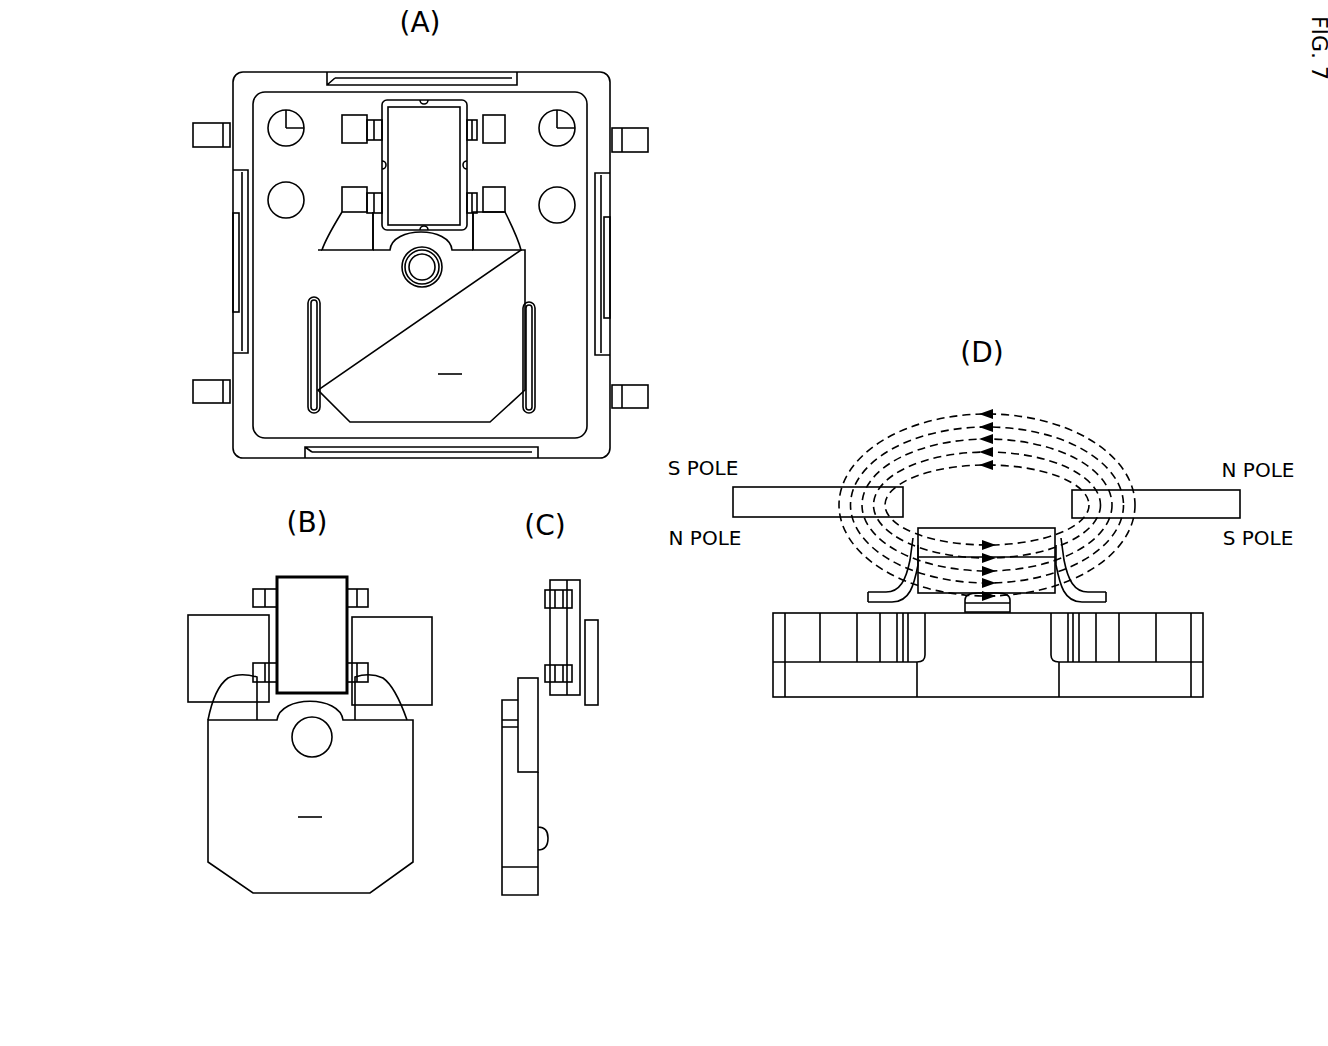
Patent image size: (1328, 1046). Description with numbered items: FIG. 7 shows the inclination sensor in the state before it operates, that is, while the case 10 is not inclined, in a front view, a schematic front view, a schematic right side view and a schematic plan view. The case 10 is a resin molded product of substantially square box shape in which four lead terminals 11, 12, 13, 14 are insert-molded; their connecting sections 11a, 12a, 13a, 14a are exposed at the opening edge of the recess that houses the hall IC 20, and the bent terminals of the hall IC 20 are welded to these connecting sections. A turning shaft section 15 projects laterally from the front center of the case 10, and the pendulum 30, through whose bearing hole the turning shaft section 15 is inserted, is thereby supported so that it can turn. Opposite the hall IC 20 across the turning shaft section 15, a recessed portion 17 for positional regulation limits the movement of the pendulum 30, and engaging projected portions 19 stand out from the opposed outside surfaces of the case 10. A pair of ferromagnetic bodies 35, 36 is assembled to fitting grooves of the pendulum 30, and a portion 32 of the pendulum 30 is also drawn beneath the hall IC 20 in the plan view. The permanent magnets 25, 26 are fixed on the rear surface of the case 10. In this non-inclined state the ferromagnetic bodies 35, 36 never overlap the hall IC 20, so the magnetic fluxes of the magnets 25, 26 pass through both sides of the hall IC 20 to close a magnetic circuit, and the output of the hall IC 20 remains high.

The case 10 is at (603, 85).
The lead terminal 11 is at (206, 128).
The lead terminal 12 is at (206, 398).
The lead terminal 13 is at (638, 138).
The lead terminal 14 is at (635, 400).
The connecting section 11a is at (347, 125).
The connecting section 12a is at (353, 197).
The connecting section 13a is at (492, 125).
The connecting section 14a is at (492, 197).
The turning shaft section 15 is at (415, 273).
The recessed portion for positional regulation 17 is at (527, 345).
The engaging projected portion 19 is at (236, 262).
The hall IC 20 is at (407, 125).
The permanent magnet 25 is at (222, 635).
The permanent magnet 26 is at (407, 640).
The pendulum 30 is at (525, 800).
The pin 32 is at (990, 607).
The ferromagnetic body 35 is at (345, 232).
The ferromagnetic body 36 is at (500, 232).